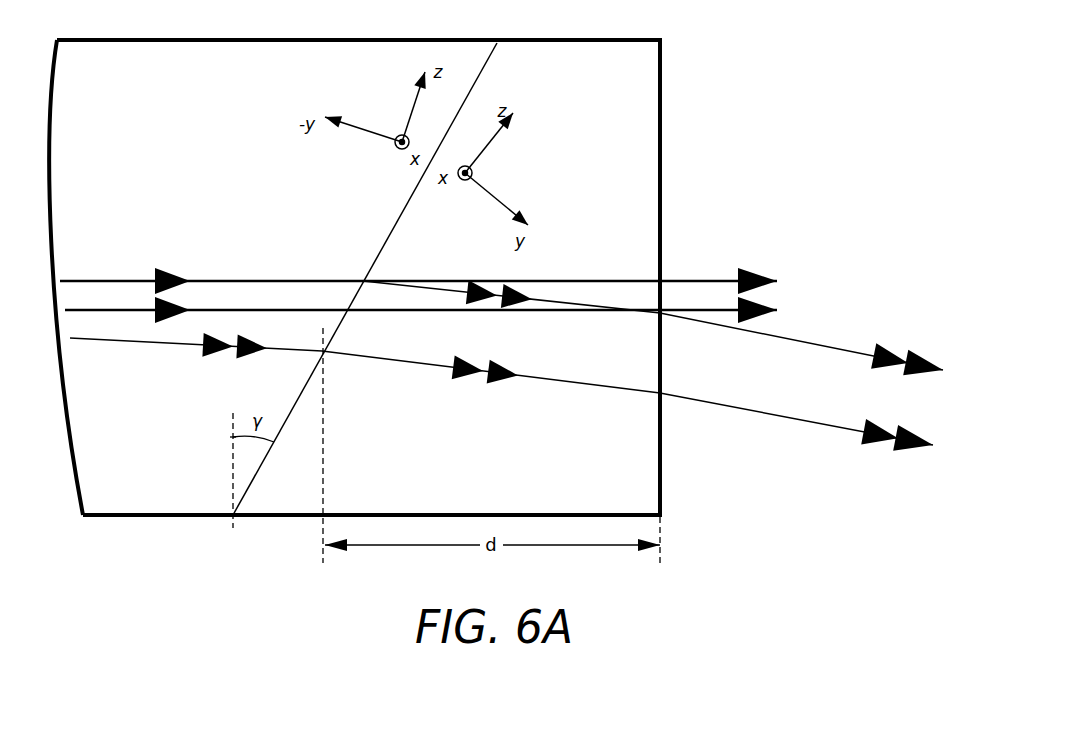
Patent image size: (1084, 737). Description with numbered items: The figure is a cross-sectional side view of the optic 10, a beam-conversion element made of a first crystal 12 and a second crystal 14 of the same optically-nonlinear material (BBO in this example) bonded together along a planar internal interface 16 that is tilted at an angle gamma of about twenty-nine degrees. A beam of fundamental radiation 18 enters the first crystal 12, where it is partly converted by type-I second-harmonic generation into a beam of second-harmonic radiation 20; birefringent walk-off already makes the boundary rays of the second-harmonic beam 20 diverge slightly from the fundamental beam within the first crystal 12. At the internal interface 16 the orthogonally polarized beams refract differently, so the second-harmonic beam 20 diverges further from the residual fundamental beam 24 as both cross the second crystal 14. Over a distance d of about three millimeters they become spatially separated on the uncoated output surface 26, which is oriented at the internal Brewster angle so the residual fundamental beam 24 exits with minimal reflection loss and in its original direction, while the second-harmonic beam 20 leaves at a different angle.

The optic 10 is at (805, 58).
The first crystal 12 is at (192, 139).
The second crystal 14 is at (516, 466).
The planar internal interface 16 is at (395, 218).
The beam of fundamental radiation 18 is at (93, 279).
The beam of second-harmonic radiation 20 is at (830, 345).
The residual fundamental beam 24 is at (705, 278).
The output surface 26 is at (665, 462).